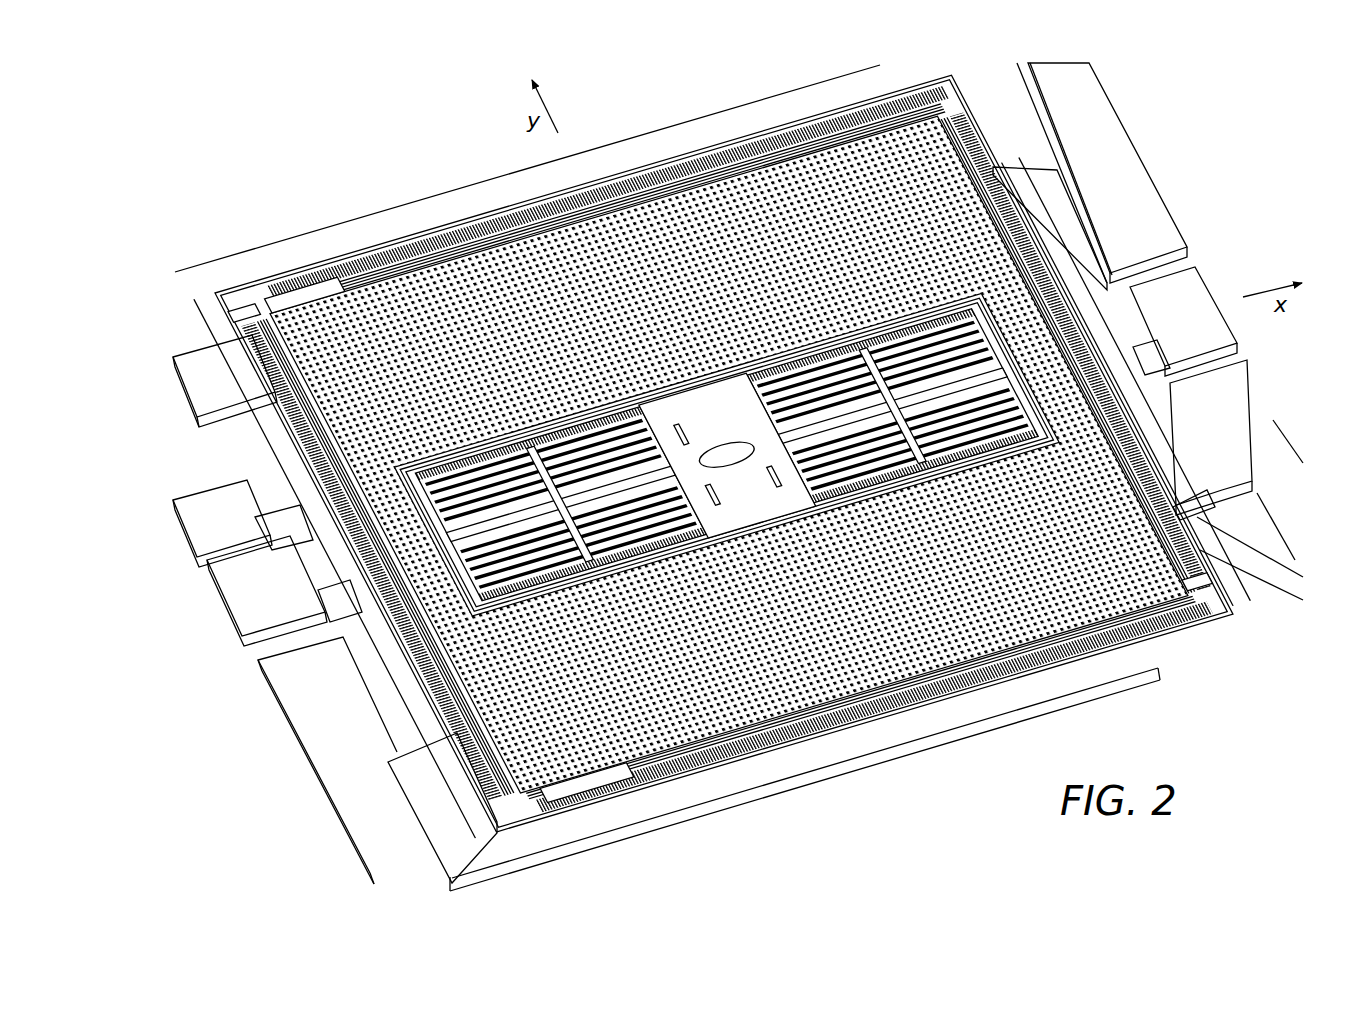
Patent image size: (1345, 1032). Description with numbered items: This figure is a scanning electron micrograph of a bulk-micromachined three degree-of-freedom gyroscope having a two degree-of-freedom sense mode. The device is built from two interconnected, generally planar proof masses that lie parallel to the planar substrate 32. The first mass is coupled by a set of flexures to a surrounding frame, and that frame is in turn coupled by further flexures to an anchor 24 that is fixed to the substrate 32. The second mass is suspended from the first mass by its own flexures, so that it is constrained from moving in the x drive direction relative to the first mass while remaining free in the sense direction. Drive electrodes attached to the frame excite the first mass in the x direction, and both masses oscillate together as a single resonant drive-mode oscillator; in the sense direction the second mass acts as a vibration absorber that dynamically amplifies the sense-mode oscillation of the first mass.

The anchor 24 is at (452, 808).
The substrate 32 is at (272, 738).